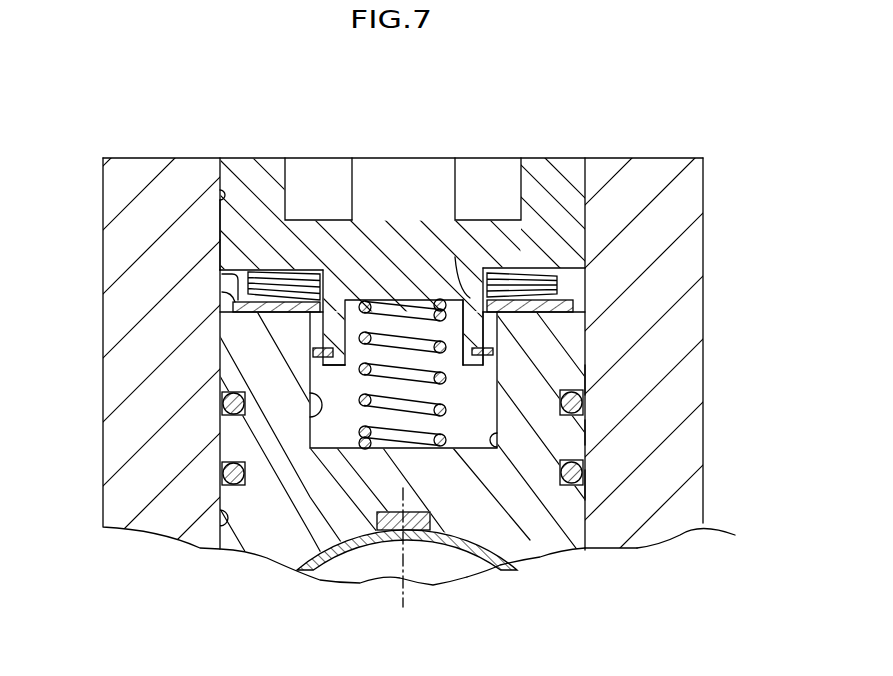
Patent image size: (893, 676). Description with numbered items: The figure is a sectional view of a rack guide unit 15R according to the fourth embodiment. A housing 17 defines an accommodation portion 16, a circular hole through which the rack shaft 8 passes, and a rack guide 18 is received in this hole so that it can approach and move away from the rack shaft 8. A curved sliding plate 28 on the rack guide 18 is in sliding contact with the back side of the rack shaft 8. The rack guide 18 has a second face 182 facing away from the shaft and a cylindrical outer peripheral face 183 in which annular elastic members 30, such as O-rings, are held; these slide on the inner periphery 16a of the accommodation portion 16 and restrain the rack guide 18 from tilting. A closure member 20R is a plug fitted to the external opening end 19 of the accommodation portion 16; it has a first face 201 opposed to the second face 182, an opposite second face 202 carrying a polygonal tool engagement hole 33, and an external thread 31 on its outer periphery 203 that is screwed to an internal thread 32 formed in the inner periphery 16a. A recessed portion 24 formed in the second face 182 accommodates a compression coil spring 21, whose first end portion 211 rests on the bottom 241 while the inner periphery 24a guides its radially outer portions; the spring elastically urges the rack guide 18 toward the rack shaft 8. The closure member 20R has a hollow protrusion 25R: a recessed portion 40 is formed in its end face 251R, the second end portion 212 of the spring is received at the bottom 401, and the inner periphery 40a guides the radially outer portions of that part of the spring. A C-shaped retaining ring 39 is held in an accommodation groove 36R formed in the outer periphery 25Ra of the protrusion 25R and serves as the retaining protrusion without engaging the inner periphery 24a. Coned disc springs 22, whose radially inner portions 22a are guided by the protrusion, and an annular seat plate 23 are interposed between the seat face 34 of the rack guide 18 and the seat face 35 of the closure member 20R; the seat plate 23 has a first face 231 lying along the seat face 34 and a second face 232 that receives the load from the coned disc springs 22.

The rack shaft 8 is at (387, 567).
The rack guide unit 15R is at (502, 148).
The accommodation portion 16 is at (222, 599).
The inner periphery 16a is at (573, 547).
The housing 17 is at (716, 516).
The rack guide 18 is at (598, 507).
The external opening end 19 is at (226, 172).
The closure member 20R is at (598, 183).
The first face 201 is at (235, 272).
The second face 202 is at (565, 158).
The outer periphery 203 is at (270, 250).
The compression coil spring 21 is at (357, 450).
The first end portion 211 is at (438, 447).
The second end portion 212 is at (365, 238).
The coned disc springs 22 is at (505, 278).
The radially inner portions 22a is at (455, 257).
The seat plate 23 is at (560, 306).
The first face 231 is at (340, 342).
The second face 232 is at (242, 294).
The recessed portion 24 is at (587, 460).
The inner periphery 24a is at (225, 470).
The bottom 241 is at (498, 440).
The protrusion 25R is at (493, 352).
The outer periphery 25Ra is at (313, 353).
The end face 251R is at (466, 370).
The sliding plate 28 is at (348, 543).
The elastic members 30 is at (587, 438).
The external thread 31 is at (222, 222).
The internal thread 32 is at (221, 192).
The tool engagement hole 33 is at (303, 175).
The seat face 34 is at (496, 337).
The seat face 35 is at (540, 270).
The accommodation groove 36R is at (305, 418).
The retaining ring 39 is at (587, 383).
The recessed portion 40 is at (345, 305).
The inner periphery 40a is at (356, 411).
The bottom 401 is at (403, 302).
The second face 182 is at (327, 330).
The outer peripheral face 183 is at (583, 403).